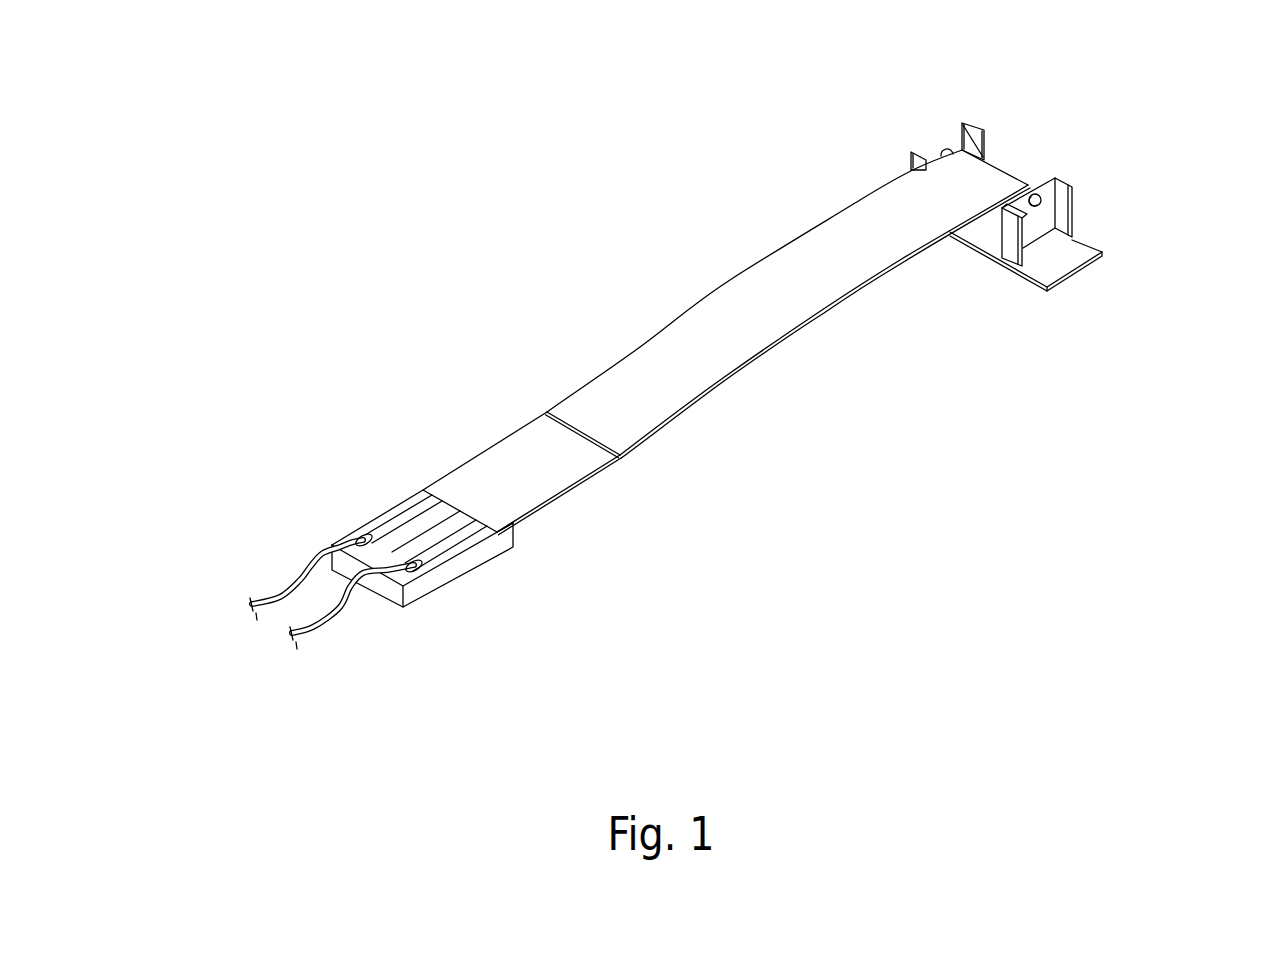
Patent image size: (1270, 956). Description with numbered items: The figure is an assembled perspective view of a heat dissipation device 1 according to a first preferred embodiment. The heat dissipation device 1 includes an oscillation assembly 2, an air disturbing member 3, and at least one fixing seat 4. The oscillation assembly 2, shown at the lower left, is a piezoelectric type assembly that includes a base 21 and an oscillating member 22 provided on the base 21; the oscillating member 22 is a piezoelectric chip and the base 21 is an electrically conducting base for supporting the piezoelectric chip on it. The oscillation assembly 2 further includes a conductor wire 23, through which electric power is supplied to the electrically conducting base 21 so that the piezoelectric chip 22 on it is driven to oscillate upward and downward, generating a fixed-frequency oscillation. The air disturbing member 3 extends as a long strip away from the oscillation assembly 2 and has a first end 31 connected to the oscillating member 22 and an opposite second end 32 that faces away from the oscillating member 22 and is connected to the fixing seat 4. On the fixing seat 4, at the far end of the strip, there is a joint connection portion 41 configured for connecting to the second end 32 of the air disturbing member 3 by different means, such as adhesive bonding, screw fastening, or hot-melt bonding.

The heat dissipation device 1 is at (1226, 82).
The oscillation assembly 2 is at (370, 358).
The base 21 is at (380, 512).
The oscillating member 22 is at (490, 473).
The conductor wire 23 is at (280, 598).
The air disturbing member 3 is at (727, 317).
The first end 31 is at (577, 412).
The second end 32 is at (952, 177).
The fixing seat 4 is at (1053, 255).
The joint connection portion 41 is at (1037, 190).